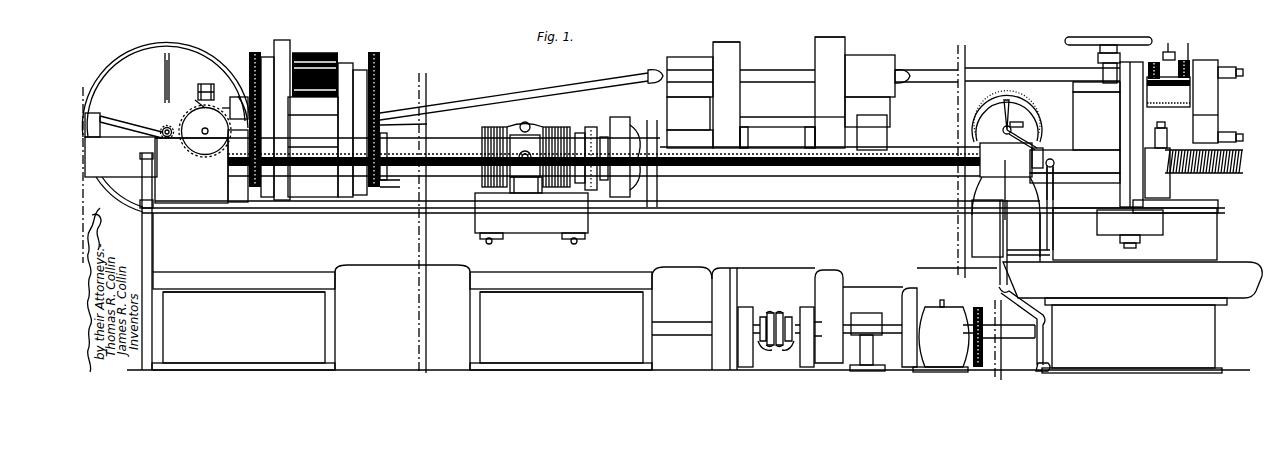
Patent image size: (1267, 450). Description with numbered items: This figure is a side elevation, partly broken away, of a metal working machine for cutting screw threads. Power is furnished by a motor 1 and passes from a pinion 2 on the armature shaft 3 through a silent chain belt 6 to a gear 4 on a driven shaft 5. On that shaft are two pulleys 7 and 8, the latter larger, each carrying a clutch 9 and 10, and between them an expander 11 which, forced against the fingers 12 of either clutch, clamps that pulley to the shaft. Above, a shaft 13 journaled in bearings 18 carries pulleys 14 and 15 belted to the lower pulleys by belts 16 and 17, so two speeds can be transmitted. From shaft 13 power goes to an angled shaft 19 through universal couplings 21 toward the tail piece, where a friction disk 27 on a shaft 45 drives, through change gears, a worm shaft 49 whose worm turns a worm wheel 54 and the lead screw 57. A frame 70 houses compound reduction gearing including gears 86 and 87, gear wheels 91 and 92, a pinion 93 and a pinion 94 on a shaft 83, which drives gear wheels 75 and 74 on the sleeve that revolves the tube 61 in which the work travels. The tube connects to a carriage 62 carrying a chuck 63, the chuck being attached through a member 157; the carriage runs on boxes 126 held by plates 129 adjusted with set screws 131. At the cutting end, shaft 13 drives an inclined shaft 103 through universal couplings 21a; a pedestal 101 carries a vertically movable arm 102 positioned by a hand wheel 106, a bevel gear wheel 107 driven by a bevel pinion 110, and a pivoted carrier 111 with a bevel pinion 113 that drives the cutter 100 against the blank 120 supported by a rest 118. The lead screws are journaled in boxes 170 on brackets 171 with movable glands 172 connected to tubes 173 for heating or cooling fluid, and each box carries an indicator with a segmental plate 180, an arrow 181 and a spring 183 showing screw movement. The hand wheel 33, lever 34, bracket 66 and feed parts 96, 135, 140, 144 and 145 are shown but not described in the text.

The motor 1 is at (943, 336).
The pinion 2 is at (983, 343).
The armature shaft 3 is at (1003, 331).
The gear 4 is at (977, 307).
The driven shaft 5 is at (892, 325).
The chain belt 6 is at (912, 293).
The pulley 7 is at (812, 297).
The pulley 8 is at (740, 297).
The clutch 9 is at (807, 337).
The clutch 10 is at (743, 327).
The expander 11 is at (778, 315).
The fingers 12 is at (762, 345).
The shaft 13 is at (782, 70).
The pulley 14 is at (815, 45).
The pulley 15 is at (743, 45).
The belt 16 is at (830, 200).
The belt 17 is at (726, 206).
The bearings 18 is at (880, 56).
The shaft 19 is at (533, 82).
The universal couplings 21 is at (651, 66).
The universal couplings 21a is at (908, 70).
The friction disk 27 is at (136, 57).
The spoke 33 is at (165, 79).
The lever 34 is at (105, 118).
The shaft 45 is at (167, 139).
The worm shaft 49 is at (204, 134).
The worm wheel 54 is at (205, 84).
The lead screw 57 is at (778, 168).
The tube 61 is at (827, 176).
The carriage 62 is at (528, 124).
The chuck 63 is at (633, 123).
The bracket 66 is at (247, 110).
The frame 70 is at (327, 130).
The gear wheel 74 is at (254, 188).
The gear wheel 75 is at (380, 187).
The shaft 83 is at (316, 56).
The gear 86 is at (245, 82).
The gear 87 is at (252, 52).
The gear wheel 91 is at (291, 40).
The gear wheel 92 is at (303, 53).
The pinion 93 is at (285, 70).
The pinion 94 is at (381, 73).
The gear 96 is at (380, 110).
The cutter 100 is at (1165, 130).
The pedestal 101 is at (1096, 116).
The arm 102 is at (1168, 92).
The shaft 103 is at (1010, 70).
The hand wheel 106 is at (1108, 35).
The bevel gear wheel 107 is at (1187, 82).
The bevel pinion 110 is at (1150, 62).
The carrier 111 is at (1205, 109).
The bevel pinion 113 is at (1186, 60).
The rest 118 is at (1152, 180).
The blank 120 is at (1075, 166).
The boxes 126 is at (532, 224).
The plates 129 is at (480, 235).
The set screws 131 is at (573, 245).
The feed roller 135 is at (500, 193).
The block 140 is at (525, 151).
The feed roller 144 is at (552, 193).
The bracket 145 is at (516, 193).
The member 157 is at (592, 127).
The boxes 170 is at (1006, 160).
The brackets 171 is at (1006, 208).
The glands 172 is at (1047, 152).
The tubes 173 is at (1055, 185).
The segmental plate 180 is at (1007, 116).
The arrow 181 is at (1016, 104).
The spring 183 is at (1020, 124).